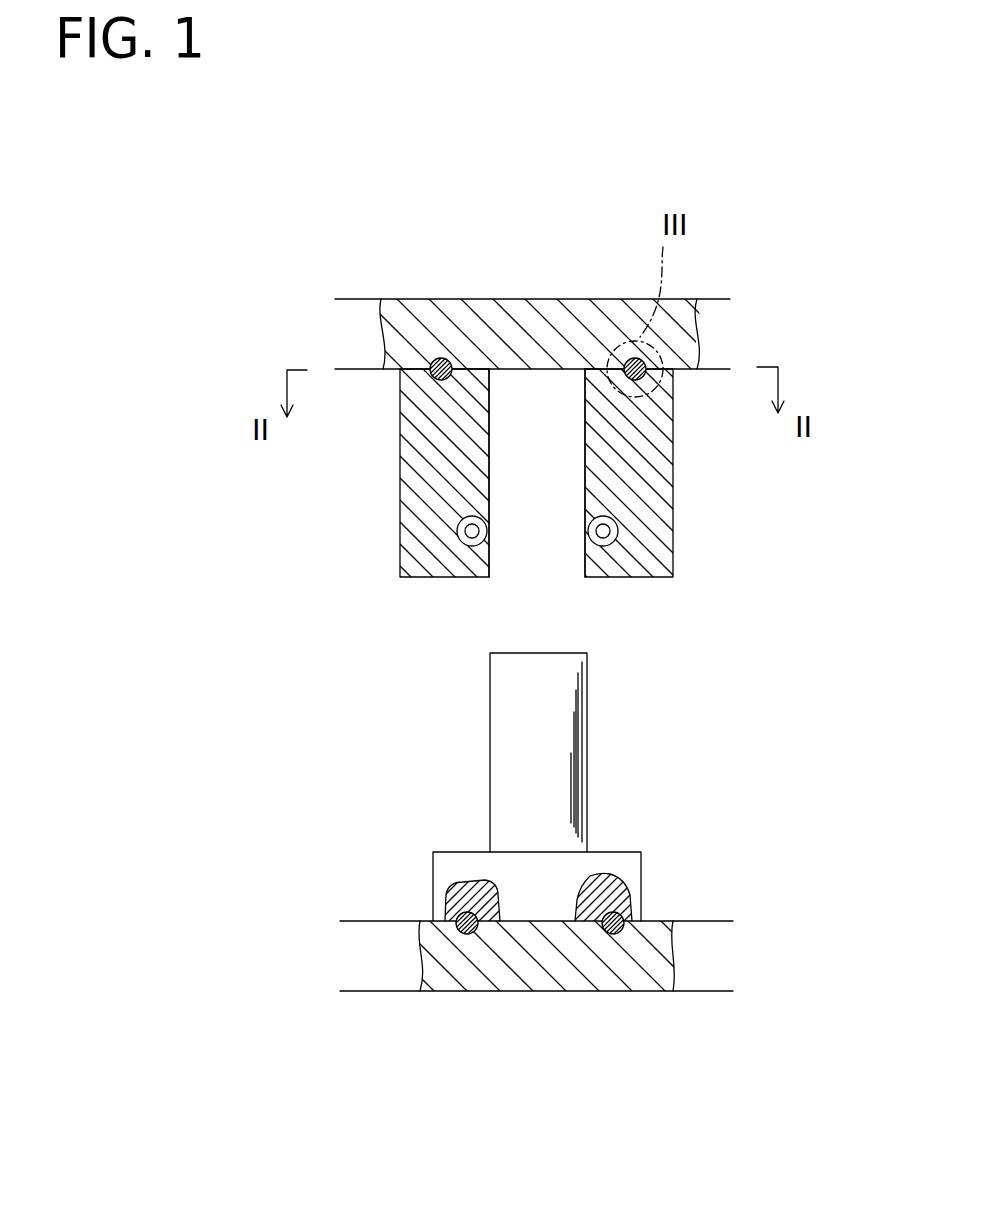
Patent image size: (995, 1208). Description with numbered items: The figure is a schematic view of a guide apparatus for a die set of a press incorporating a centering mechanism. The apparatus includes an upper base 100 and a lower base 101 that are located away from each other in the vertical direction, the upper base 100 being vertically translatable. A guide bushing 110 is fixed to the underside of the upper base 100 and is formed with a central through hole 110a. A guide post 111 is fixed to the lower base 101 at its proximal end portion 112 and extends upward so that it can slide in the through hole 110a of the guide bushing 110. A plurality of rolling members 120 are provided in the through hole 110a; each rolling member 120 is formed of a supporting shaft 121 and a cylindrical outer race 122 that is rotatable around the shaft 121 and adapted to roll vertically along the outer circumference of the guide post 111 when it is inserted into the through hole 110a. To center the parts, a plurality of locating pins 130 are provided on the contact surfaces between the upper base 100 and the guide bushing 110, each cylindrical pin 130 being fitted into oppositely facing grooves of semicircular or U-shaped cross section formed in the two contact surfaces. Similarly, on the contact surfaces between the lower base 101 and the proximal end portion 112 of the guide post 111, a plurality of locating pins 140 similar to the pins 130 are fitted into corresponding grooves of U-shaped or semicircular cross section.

The upper base 100 is at (353, 312).
The lower base 101 is at (388, 975).
The guide bushing 110 is at (400, 482).
The central through hole 110a is at (582, 565).
The guide post 111 is at (505, 727).
The proximal end portion 112 is at (448, 872).
The rolling member 120 is at (622, 527).
The supporting shaft 121 is at (472, 532).
The cylindrical outer race 122 is at (472, 547).
The locating pin 130 is at (437, 387).
The locating pin 140 is at (470, 935).